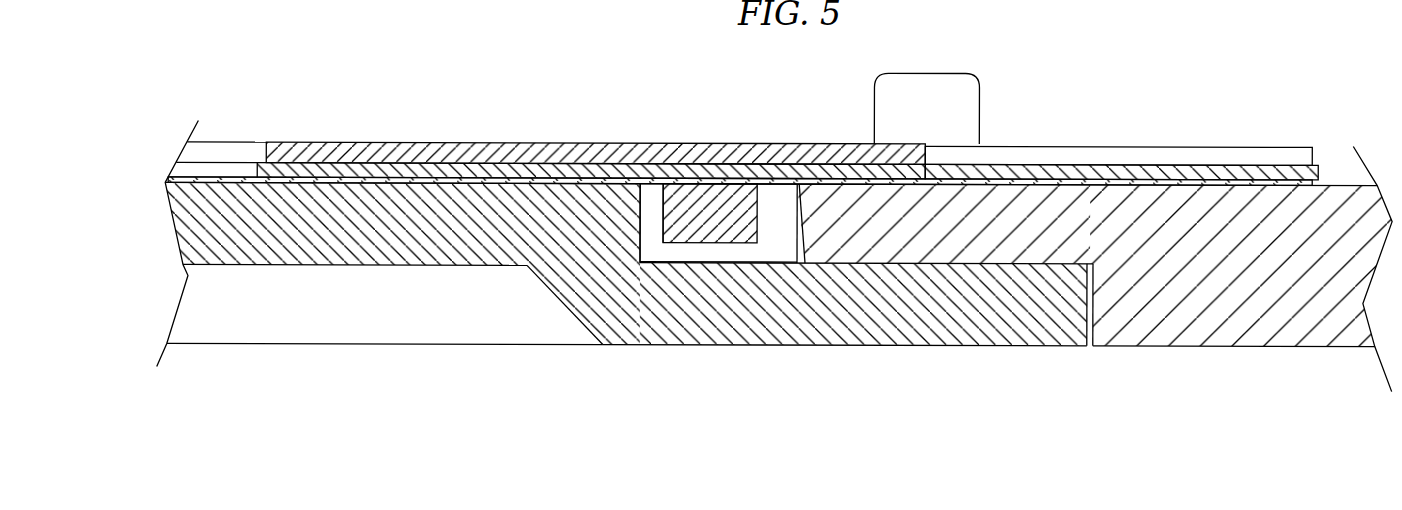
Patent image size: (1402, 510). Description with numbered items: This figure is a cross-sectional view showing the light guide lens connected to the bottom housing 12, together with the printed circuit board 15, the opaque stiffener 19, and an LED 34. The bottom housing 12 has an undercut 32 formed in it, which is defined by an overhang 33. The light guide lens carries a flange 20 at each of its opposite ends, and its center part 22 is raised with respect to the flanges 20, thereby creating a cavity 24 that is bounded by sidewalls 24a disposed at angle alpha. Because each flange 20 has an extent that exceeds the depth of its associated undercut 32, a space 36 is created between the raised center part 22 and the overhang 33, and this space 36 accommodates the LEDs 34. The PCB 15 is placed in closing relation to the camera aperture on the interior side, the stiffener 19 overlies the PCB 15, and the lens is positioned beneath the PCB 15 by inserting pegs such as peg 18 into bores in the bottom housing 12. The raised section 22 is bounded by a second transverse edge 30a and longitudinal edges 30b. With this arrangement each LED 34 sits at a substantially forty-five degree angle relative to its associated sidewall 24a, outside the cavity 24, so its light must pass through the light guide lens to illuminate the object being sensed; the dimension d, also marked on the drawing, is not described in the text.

The bottom housing 12 is at (1172, 352).
The printed circuit board 15 is at (1208, 166).
The upstanding peg 18 is at (980, 107).
The opaque stiffener 19 is at (555, 143).
The flange 20 is at (980, 337).
The raised center part 22 is at (307, 248).
The cavity 24 is at (303, 300).
The sidewall 24a is at (567, 307).
The second transverse edge 30a is at (657, 190).
The longitudinal edge 30b is at (773, 253).
The undercut 32 is at (895, 265).
The overhang 33 is at (1117, 167).
The light emitting diode 34 is at (770, 193).
The space 36 is at (781, 201).
The distance d is at (541, 287).